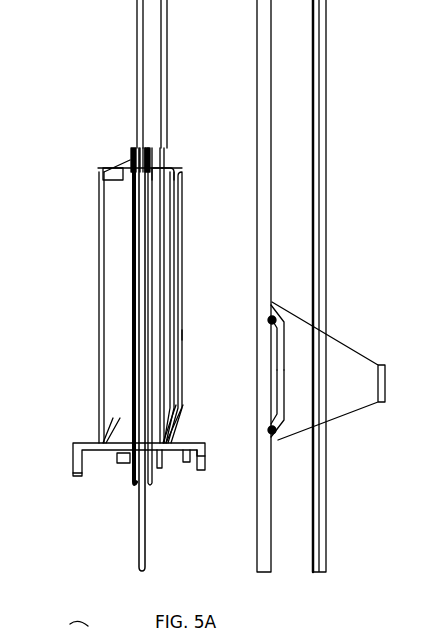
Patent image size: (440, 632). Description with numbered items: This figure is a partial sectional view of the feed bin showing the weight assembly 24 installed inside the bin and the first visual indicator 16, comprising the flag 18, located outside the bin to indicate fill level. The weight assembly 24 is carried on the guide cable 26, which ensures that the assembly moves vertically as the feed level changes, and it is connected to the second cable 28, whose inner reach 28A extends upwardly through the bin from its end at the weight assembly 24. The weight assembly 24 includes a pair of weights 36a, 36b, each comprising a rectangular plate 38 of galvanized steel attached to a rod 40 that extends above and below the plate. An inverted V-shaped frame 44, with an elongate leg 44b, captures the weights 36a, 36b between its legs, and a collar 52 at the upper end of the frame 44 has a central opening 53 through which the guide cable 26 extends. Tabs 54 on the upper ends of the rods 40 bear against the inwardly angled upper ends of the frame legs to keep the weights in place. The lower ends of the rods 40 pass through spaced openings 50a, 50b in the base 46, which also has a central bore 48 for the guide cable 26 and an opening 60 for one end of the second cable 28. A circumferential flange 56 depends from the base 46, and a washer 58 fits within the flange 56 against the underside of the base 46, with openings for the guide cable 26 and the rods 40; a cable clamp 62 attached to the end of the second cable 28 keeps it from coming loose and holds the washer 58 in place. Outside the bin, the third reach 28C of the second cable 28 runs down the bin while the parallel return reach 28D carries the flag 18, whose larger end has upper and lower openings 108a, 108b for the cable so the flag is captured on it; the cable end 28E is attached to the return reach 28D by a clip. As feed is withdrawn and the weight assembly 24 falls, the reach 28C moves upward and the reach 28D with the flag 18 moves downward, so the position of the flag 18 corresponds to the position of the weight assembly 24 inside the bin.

The first visual indicator 16 is at (329, 364).
The flag 18 is at (356, 332).
The weight assembly 24 is at (132, 316).
The guide cable 26 is at (137, 69).
The second cable 28 is at (172, 70).
The inner reach of cable 28A is at (169, 47).
The third reach of cable 28C is at (327, 212).
The return reach of cable 28D is at (300, 218).
The cable end 28E is at (312, 266).
The weight 36a is at (99, 290).
The weight 36b is at (177, 265).
The rectangular plate 38 is at (111, 247).
The rod 40 is at (129, 146).
The inverted V-shaped frame 44 is at (186, 204).
The elongate leg 44b is at (184, 326).
The base 46 is at (84, 440).
The central bore 48 is at (122, 456).
The opening 50a is at (104, 440).
The opening 50b is at (168, 442).
The collar 52 is at (124, 153).
The central opening 53 is at (146, 150).
The tab 54 is at (103, 172).
The flange 56 is at (74, 481).
The washer 58 is at (186, 463).
The opening 60 is at (201, 446).
The cable clamp 62 is at (165, 470).
The upper opening 108a is at (300, 306).
The lower opening 108b is at (282, 440).